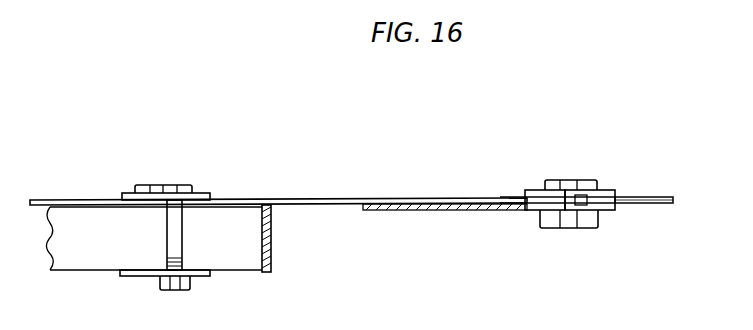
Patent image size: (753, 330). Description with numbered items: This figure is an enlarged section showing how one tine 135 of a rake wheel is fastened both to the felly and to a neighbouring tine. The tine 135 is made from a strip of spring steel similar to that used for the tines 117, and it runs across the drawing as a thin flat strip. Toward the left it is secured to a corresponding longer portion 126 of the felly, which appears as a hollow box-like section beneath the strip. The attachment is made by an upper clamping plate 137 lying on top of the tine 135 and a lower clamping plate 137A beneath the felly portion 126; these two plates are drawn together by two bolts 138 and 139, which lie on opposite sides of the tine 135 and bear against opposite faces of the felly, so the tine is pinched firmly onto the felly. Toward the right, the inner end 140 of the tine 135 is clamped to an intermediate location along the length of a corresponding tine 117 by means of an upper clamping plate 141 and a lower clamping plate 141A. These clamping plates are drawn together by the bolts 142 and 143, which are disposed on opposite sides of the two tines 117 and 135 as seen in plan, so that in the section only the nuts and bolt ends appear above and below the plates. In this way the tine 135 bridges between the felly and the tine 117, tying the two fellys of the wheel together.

The tine 117 is at (648, 206).
The longer portion of the felly 126 is at (92, 258).
The tine 135 is at (323, 205).
The upper clamping plate 137 is at (200, 195).
The lower clamping plate 137A is at (205, 277).
The bolt 138 is at (145, 183).
The bolt 139 is at (175, 185).
The inner end of tine 140 is at (617, 191).
The upper clamping plate 141 is at (602, 190).
The lower clamping plate 141A is at (527, 212).
The bolt 142 is at (583, 181).
The bolt 143 is at (545, 183).